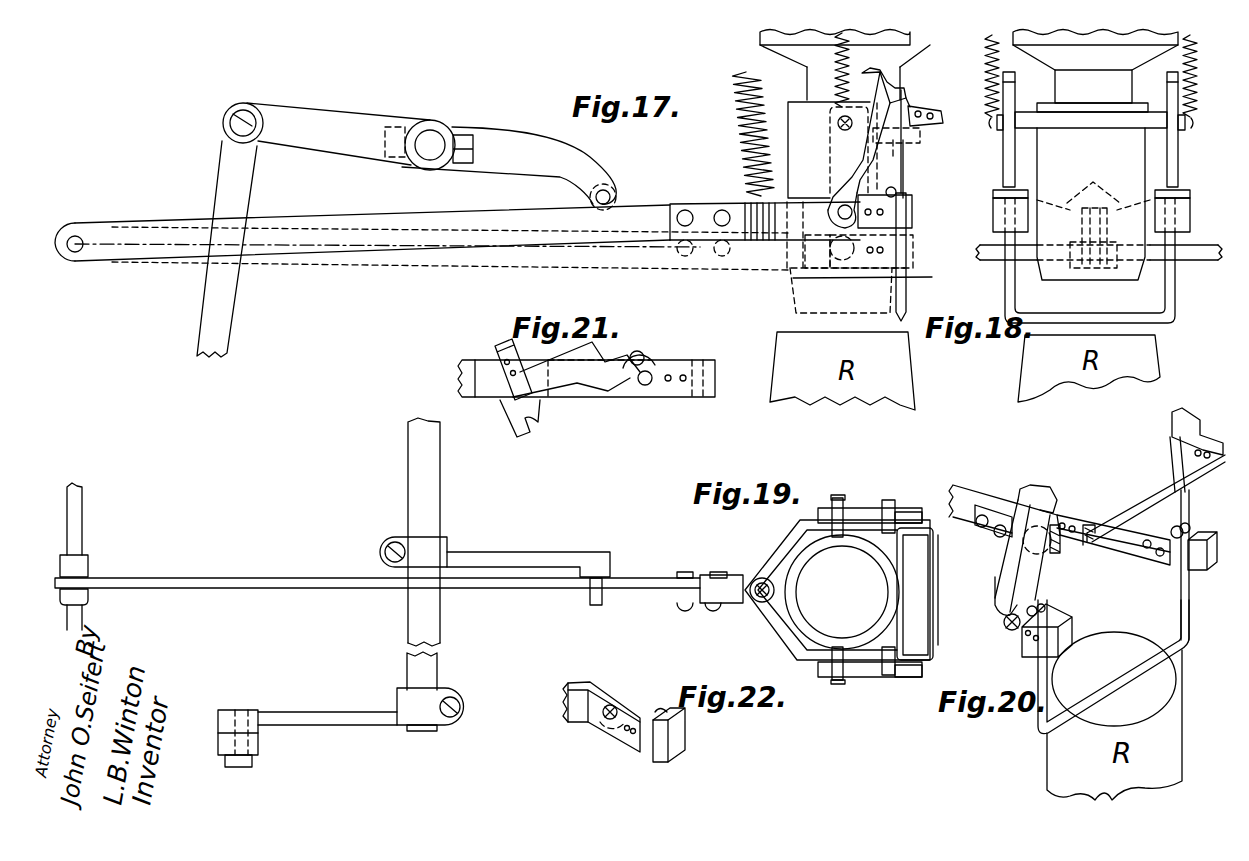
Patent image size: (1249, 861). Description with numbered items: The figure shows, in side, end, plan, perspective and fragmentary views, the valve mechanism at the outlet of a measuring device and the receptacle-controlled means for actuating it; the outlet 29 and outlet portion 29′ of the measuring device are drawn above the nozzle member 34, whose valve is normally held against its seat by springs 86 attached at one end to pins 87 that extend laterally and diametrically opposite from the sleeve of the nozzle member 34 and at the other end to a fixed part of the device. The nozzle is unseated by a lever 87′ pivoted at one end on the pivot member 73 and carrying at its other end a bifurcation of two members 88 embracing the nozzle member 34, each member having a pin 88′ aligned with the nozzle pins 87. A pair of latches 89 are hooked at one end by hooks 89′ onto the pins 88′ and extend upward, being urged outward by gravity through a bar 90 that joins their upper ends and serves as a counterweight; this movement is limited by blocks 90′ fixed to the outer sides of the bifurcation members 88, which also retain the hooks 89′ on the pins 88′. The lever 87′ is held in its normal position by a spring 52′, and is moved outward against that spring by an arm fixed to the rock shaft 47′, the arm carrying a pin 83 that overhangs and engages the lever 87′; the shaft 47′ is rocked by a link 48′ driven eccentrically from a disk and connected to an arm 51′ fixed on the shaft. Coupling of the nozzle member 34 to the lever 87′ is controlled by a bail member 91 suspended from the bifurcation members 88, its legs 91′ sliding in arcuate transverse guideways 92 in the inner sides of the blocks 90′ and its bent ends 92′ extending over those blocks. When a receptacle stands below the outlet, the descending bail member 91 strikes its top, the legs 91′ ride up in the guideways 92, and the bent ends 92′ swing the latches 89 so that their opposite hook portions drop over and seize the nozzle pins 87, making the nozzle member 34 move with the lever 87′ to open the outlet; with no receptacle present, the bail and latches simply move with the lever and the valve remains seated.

In FIG. 17, the hopper 29 is at (930, 38).
In FIG. 18, the hopper 29 is at (1024, 38).
In FIG. 17, the hopper neck 29′ is at (812, 80).
In FIG. 18, the hopper neck 29′ is at (1112, 90).
In FIG. 17, the nozzle member 34 is at (845, 150).
In FIG. 18, the nozzle member 34 is at (1091, 204).
In FIG. 19, the nozzle member 34 is at (886, 573).
In FIG. 17, the rock shaft 47′ is at (433, 142).
In FIG. 19, the rock shaft 47′ is at (428, 514).
In FIG. 17, the link 48′ is at (217, 325).
In FIG. 19, the link 48′ is at (258, 746).
In FIG. 17, the arm 51′ is at (353, 130).
In FIG. 19, the arm 51′ is at (319, 714).
In FIG. 17, the spring 52′ is at (740, 120).
In FIG. 17, the pivot member 73 is at (78, 252).
In FIG. 18, the pivot member 73 is at (1212, 258).
In FIG. 19, the pivot member 73 is at (78, 541).
In FIG. 17, the pin 83 is at (612, 197).
In FIG. 19, the pin 83 is at (603, 598).
In FIG. 17, the springs 86 is at (849, 66).
In FIG. 18, the springs 86 is at (988, 68).
In FIG. 17, the pins 87 is at (837, 127).
In FIG. 18, the pins 87 is at (999, 127).
In FIG. 19, the pins 87 is at (843, 506).
In FIG. 17, the lever 87′ is at (422, 235).
In FIG. 18, the lever 87′ is at (1084, 222).
In FIG. 21, the lever 87′ is at (465, 377).
In FIG. 19, the lever 87′ is at (296, 583).
In FIG. 20, the lever 87′ is at (968, 493).
In FIG. 17, the bifurcation members 88 is at (785, 235).
In FIG. 18, the bifurcation members 88 is at (1093, 191).
In FIG. 21, the bifurcation members 88 is at (660, 372).
In FIG. 19, the bifurcation members 88 is at (766, 561).
In FIG. 22, the bifurcation members 88 is at (590, 683).
In FIG. 20, the bifurcation members 88 is at (1090, 517).
In FIG. 17, the pins 88′ is at (838, 205).
In FIG. 21, the pins 88′ is at (644, 386).
In FIG. 22, the pins 88′ is at (613, 705).
In FIG. 20, the pins 88′ is at (1005, 624).
In FIG. 17, the latches 89 is at (896, 161).
In FIG. 18, the latches 89 is at (1003, 165).
In FIG. 21, the latches 89 is at (582, 385).
In FIG. 19, the latches 89 is at (866, 510).
In FIG. 20, the latches 89 is at (1184, 462).
In FIG. 17, the hooks 89′ is at (830, 242).
In FIG. 21, the hooks 89′ is at (638, 352).
In FIG. 20, the hooks 89′ is at (1012, 634).
In FIG. 17, the bar 90 is at (944, 120).
In FIG. 18, the bar 90 is at (1064, 118).
In FIG. 21, the bar 90 is at (500, 345).
In FIG. 19, the bar 90 is at (933, 612).
In FIG. 20, the bar 90 is at (1135, 512).
In FIG. 17, the blocks 90′ is at (913, 213).
In FIG. 18, the blocks 90′ is at (997, 216).
In FIG. 19, the blocks 90′ is at (906, 512).
In FIG. 22, the blocks 90′ is at (676, 738).
In FIG. 20, the blocks 90′ is at (1195, 572).
In FIG. 17, the bail member 91 is at (906, 306).
In FIG. 18, the bail member 91 is at (1066, 318).
In FIG. 19, the bail member 91 is at (898, 626).
In FIG. 20, the bail member 91 is at (1110, 694).
In FIG. 17, the legs 91′ is at (913, 250).
In FIG. 18, the legs 91′ is at (1005, 285).
In FIG. 20, the legs 91′ is at (1189, 612).
In FIG. 22, the guideways 92 is at (663, 709).
In FIG. 20, the guideways 92 is at (1173, 563).
In FIG. 17, the bent ends 92′ is at (897, 192).
In FIG. 18, the bent ends 92′ is at (994, 193).
In FIG. 19, the bent ends 92′ is at (888, 500).
In FIG. 20, the bent ends 92′ is at (1190, 528).